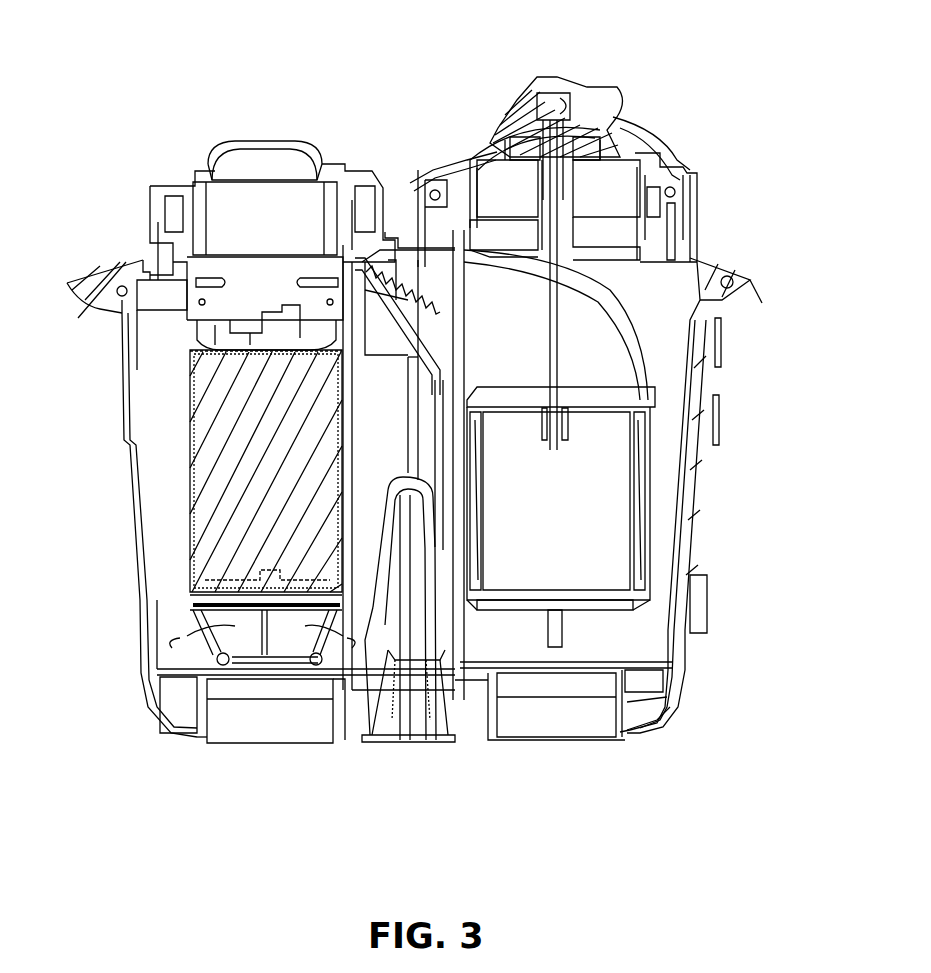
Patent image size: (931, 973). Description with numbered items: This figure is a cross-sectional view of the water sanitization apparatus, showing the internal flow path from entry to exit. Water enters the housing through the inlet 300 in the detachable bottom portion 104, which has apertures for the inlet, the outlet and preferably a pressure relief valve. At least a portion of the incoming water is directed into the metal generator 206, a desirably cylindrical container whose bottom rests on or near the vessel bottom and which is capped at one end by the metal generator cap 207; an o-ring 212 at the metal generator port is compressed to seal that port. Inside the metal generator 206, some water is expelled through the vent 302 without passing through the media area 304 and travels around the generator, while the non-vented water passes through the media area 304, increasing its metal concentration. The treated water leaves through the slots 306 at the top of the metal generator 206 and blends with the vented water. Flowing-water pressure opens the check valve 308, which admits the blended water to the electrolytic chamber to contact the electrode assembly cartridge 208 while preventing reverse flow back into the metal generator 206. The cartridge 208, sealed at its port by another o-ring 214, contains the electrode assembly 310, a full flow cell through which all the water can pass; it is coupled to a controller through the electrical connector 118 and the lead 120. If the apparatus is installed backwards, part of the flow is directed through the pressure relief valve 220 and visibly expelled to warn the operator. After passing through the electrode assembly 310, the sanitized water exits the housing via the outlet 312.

The detachable bottom portion 104 is at (682, 677).
The electrical connector 118 is at (562, 92).
The lead 120 is at (665, 145).
The metal generator 206 is at (187, 505).
The metal generator cap 207 is at (255, 148).
The electrode assembly cartridge 208 is at (610, 280).
The o-ring 212 is at (162, 212).
The o-ring 214 is at (680, 195).
The pressure relief valve 220 is at (432, 730).
The inlet 300 is at (280, 740).
The vent 302 is at (227, 635).
The media area 304 is at (250, 445).
The slots 306 is at (300, 268).
The check valve 308 is at (420, 305).
The electrode assembly 310 is at (586, 557).
The outlet 312 is at (550, 745).